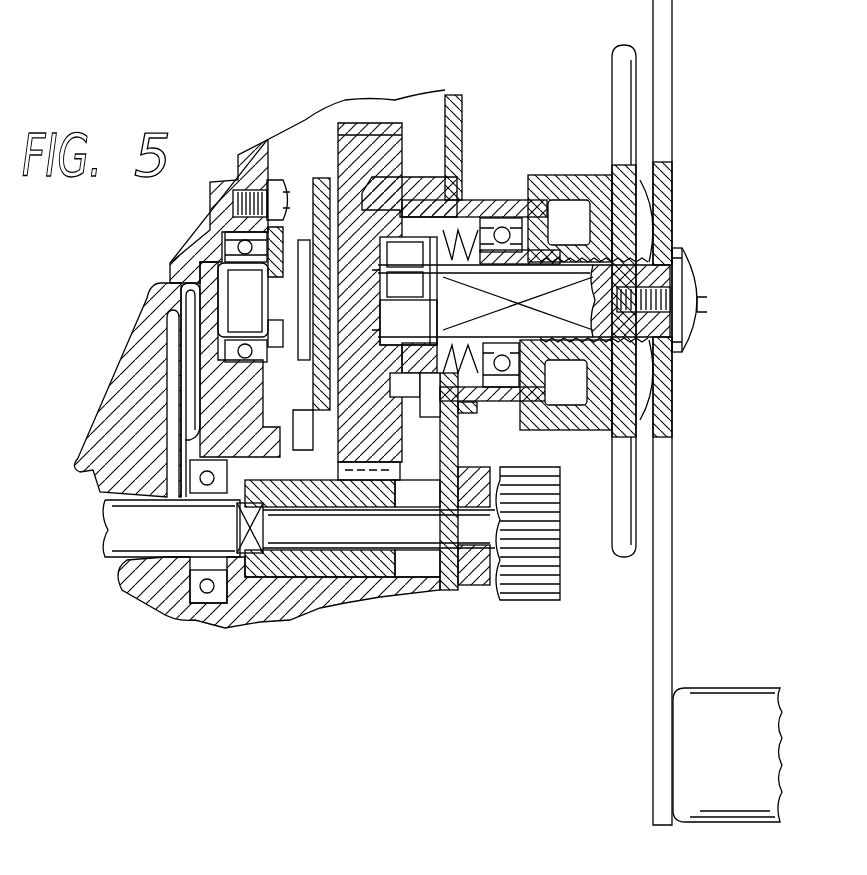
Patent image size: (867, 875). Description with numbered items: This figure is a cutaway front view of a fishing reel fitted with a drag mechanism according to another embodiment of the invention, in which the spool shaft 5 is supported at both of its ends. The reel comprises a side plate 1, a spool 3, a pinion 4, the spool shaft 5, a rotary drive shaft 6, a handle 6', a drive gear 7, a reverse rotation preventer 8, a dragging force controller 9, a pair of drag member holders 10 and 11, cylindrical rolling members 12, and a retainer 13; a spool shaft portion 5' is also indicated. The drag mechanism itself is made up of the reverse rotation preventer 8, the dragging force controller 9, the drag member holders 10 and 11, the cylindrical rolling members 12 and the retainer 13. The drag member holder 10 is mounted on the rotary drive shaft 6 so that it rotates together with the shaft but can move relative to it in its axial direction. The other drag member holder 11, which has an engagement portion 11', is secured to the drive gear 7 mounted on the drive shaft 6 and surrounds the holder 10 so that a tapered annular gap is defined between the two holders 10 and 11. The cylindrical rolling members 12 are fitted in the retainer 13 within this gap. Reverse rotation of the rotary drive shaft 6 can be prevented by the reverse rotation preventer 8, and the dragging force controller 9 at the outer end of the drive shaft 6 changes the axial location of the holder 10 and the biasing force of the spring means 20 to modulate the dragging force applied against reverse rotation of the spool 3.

The side plate 1 is at (246, 157).
The spool 3 is at (143, 366).
The pinion 4 is at (330, 590).
The spool shaft 5 is at (283, 528).
The shaft 5' is at (143, 13).
The rotary drive shaft 6 is at (524, 254).
The handle 6' is at (717, 412).
The drive gear 7 is at (357, 128).
The reverse rotation preventer 8 is at (322, 178).
The dragging force controller 9 is at (625, 77).
The drag member holder 10 is at (422, 400).
The drag member holder 11 is at (424, 321).
The engagement portion 11' is at (409, 131).
The cylindrical rolling members 12 is at (457, 243).
The retainer 13 is at (450, 203).
The spring means 20 is at (545, 432).